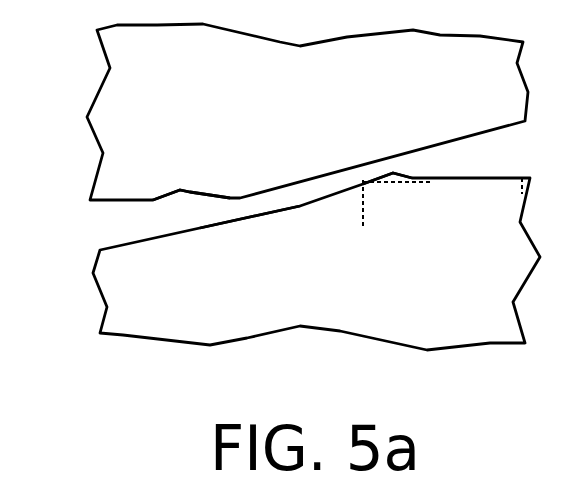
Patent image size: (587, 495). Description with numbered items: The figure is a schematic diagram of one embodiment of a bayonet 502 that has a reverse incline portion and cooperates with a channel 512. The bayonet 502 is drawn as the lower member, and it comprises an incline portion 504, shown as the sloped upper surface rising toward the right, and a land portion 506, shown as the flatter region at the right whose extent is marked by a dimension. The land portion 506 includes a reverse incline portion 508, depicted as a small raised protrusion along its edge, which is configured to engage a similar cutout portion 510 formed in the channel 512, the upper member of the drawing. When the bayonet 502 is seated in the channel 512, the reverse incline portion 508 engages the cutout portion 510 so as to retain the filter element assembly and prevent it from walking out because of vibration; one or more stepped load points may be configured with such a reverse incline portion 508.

The bayonet 502 is at (476, 330).
The incline portion 504 is at (263, 208).
The land portion 506 is at (516, 203).
The reverse incline portion 508 is at (432, 162).
The cutout portion 510 is at (176, 206).
The channel 512 is at (206, 92).